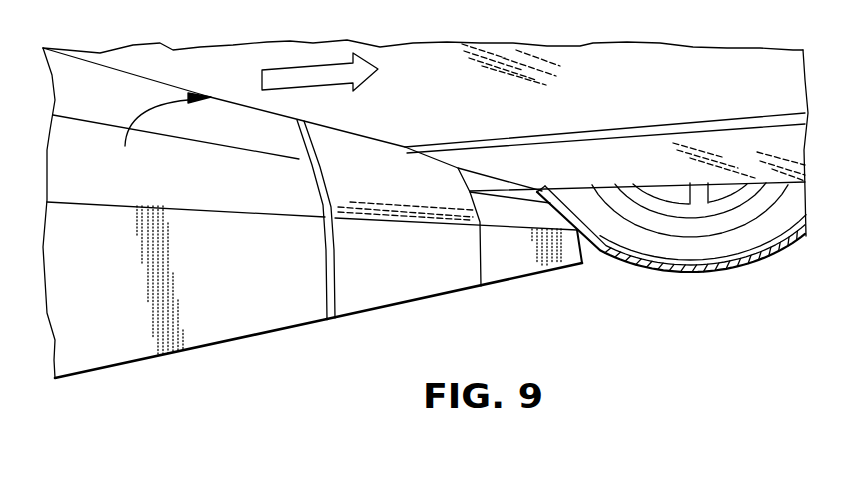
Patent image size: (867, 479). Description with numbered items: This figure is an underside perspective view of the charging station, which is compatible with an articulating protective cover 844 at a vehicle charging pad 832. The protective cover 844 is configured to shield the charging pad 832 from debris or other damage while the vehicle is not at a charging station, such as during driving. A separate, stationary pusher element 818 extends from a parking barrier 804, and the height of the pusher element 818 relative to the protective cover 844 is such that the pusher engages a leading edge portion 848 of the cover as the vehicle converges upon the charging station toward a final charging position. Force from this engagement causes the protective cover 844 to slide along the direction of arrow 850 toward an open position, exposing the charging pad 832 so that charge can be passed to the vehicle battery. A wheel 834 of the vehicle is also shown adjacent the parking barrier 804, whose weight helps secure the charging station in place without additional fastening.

The parking barrier 804 is at (210, 322).
The pusher element 818 is at (408, 283).
The charging pad 832 is at (111, 104).
The wheel 834 is at (683, 248).
The protective cover 844 is at (452, 116).
The leading edge portion 848 is at (158, 136).
The arrow 850 is at (331, 63).